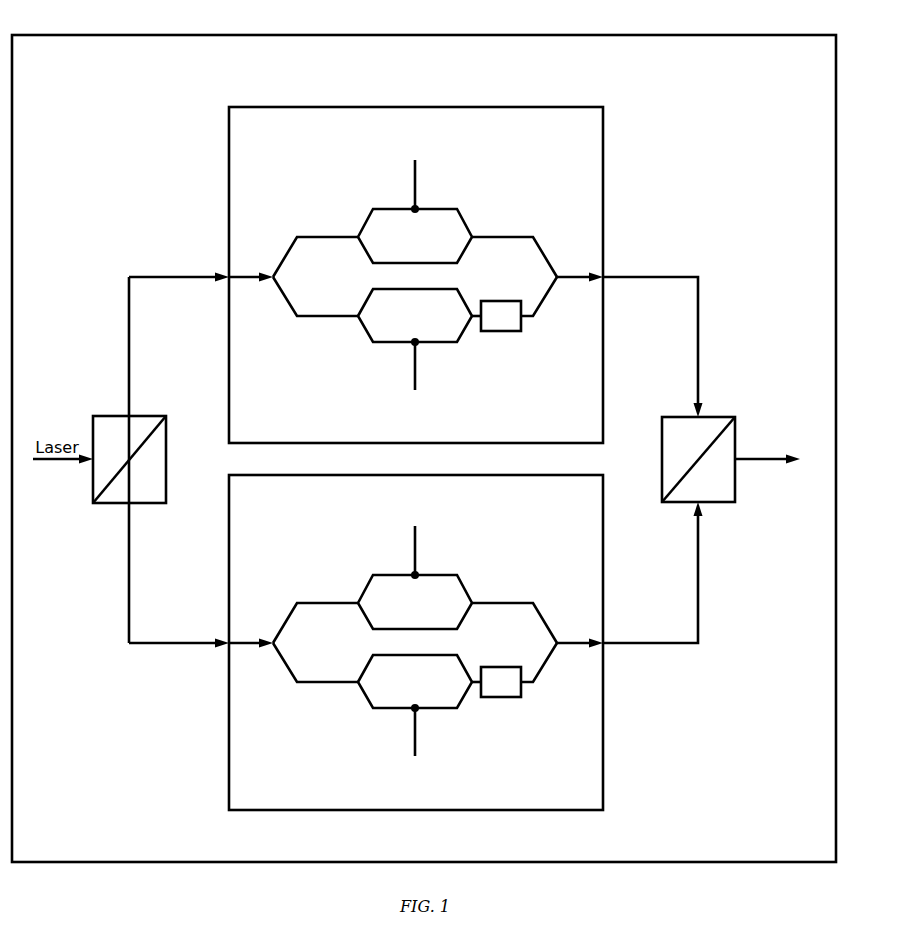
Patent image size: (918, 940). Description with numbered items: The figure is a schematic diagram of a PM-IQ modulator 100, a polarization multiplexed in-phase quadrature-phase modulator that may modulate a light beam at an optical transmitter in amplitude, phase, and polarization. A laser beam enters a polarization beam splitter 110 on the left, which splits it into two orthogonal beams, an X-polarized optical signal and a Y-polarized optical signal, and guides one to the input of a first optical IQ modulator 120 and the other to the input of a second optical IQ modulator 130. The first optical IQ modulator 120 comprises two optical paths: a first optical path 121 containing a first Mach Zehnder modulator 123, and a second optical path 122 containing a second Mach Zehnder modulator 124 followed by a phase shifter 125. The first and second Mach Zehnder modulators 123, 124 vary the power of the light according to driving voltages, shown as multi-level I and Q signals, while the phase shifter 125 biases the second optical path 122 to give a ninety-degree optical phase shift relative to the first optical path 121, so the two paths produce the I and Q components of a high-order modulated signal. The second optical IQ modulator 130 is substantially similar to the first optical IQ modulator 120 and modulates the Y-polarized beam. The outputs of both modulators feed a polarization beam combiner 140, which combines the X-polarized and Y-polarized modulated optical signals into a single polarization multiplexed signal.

The PM-IQ modulator 100 is at (155, 28).
The polarization beam splitter 110 is at (116, 503).
The first optical IQ modulator 120 is at (378, 275).
The first optical path 121 is at (334, 237).
The second optical path 122 is at (334, 316).
The first Mach Zehnder modulator 123 is at (399, 209).
The second Mach Zehnder modulator 124 is at (433, 342).
The phase shifter 125 is at (509, 331).
The second optical IQ modulator 130 is at (229, 779).
The polarization beam combiner 140 is at (720, 502).